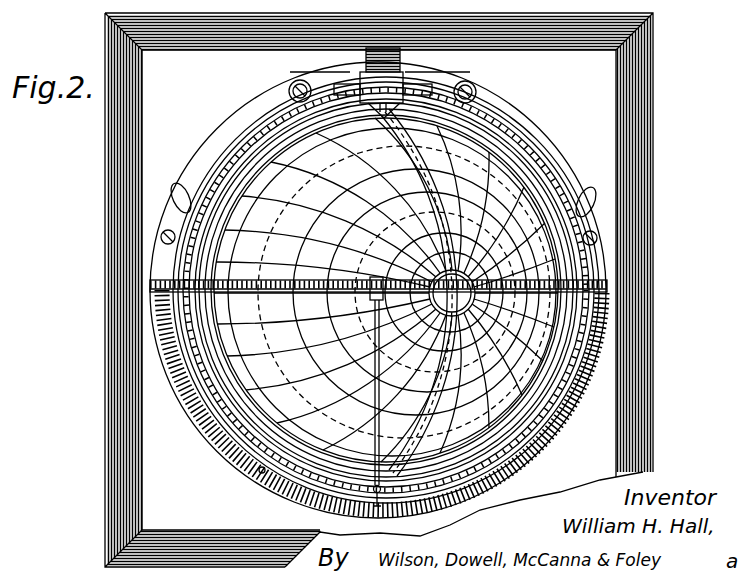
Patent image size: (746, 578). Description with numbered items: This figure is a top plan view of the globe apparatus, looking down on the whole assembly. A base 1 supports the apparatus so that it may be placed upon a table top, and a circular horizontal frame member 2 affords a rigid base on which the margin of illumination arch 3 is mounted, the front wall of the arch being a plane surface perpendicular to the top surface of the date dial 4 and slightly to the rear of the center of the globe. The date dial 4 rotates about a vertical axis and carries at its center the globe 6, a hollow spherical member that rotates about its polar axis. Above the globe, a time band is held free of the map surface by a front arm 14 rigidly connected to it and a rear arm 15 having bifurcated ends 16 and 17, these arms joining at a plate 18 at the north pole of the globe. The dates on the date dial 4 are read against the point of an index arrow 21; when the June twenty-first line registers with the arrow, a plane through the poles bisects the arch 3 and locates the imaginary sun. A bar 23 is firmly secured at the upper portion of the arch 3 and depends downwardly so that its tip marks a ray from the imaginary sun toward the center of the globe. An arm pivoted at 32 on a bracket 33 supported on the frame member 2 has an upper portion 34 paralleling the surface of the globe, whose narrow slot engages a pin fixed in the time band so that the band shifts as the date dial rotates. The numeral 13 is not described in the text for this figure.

The base 1 is at (642, 183).
The circular horizontal frame member 2 is at (218, 440).
The margin of illumination arch 3 is at (315, 294).
The date dial 4 is at (224, 182).
The globe 6 is at (548, 378).
The stud 13 is at (260, 472).
The front arm 14 is at (414, 466).
The rear arm 15 is at (392, 184).
The bifurcated end 16 is at (290, 112).
The bifurcated end 17 is at (476, 98).
The plate 18 is at (452, 293).
The index arrow 21 is at (380, 500).
The bar 23 is at (372, 378).
The pivot 32 is at (428, 78).
The bracket 33 is at (352, 78).
The portion paralleling the surface of the globe 34 is at (381, 95).